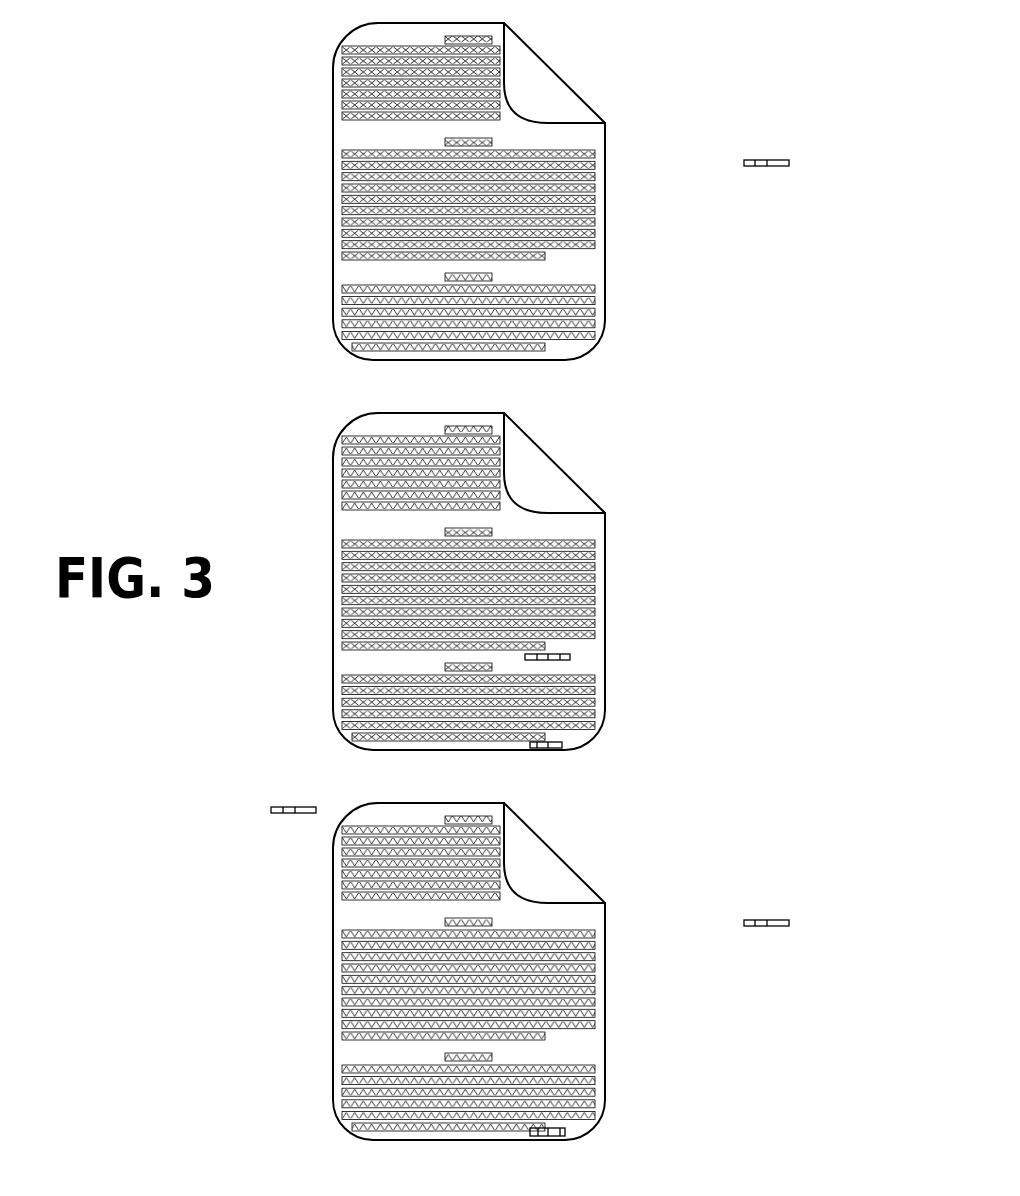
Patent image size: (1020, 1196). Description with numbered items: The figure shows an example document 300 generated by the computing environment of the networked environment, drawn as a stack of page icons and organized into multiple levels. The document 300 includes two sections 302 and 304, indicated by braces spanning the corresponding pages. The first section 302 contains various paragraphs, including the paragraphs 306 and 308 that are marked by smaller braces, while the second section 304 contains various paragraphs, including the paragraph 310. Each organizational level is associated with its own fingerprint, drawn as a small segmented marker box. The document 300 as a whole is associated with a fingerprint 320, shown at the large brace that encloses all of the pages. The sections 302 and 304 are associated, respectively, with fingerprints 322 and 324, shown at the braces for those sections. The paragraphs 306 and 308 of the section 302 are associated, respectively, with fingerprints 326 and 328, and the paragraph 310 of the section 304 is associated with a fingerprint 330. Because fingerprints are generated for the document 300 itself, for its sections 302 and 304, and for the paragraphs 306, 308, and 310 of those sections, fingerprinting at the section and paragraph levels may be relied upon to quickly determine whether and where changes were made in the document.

The document 300 is at (323, 1133).
The section 302 is at (612, 738).
The section 304 is at (612, 1138).
The paragraph 306 is at (610, 651).
The paragraph 308 is at (610, 738).
The paragraph 310 is at (610, 1130).
The fingerprint 320 is at (293, 814).
The fingerprint 322 is at (768, 167).
The fingerprint 324 is at (768, 927).
The fingerprint 326 is at (548, 661).
The fingerprint 328 is at (548, 749).
The fingerprint 330 is at (548, 1137).